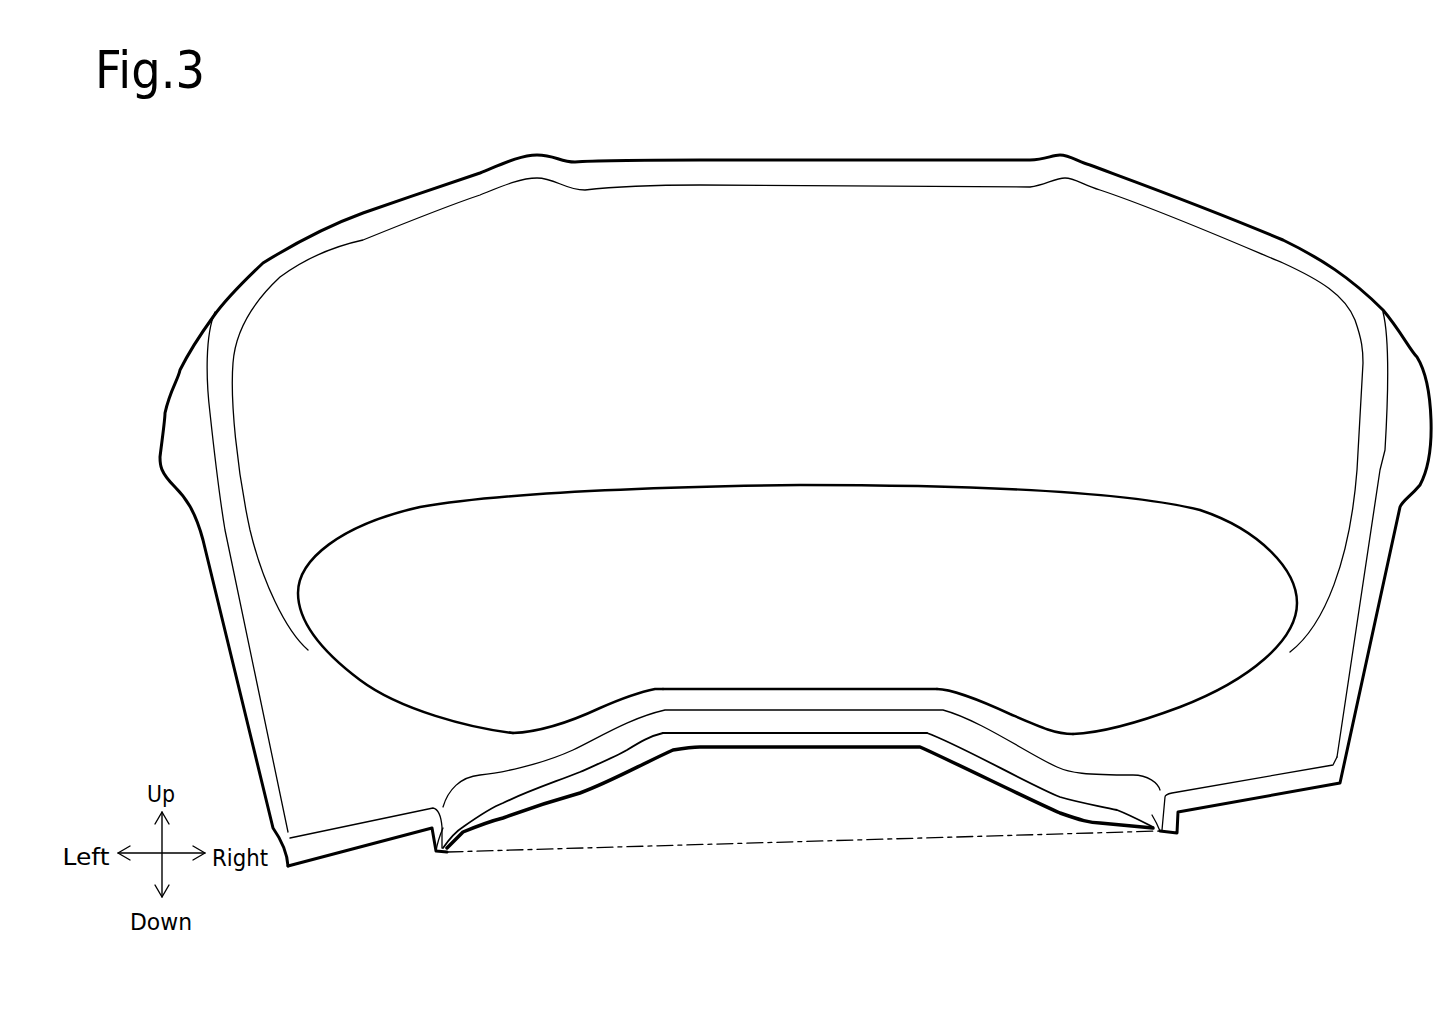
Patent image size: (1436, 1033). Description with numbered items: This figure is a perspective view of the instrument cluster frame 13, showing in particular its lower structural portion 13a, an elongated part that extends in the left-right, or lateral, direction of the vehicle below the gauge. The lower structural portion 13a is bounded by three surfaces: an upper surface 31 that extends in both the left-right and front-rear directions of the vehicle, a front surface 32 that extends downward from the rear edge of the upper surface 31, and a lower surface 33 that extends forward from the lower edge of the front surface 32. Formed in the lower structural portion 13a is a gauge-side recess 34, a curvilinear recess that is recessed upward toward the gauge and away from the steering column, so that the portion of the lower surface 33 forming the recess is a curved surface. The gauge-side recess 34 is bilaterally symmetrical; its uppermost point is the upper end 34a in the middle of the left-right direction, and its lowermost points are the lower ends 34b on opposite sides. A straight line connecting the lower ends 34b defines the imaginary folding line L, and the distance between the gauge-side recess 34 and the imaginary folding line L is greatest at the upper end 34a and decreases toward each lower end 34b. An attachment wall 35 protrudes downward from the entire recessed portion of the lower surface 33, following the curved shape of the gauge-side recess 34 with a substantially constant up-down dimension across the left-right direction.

The instrument cluster frame 13 is at (286, 179).
The lower structural portion 13a is at (787, 632).
The upper surface 31 is at (795, 687).
The front surface 32 is at (853, 698).
The lower surface 33 is at (898, 723).
The gauge-side recess 34 is at (604, 750).
The upper end 34a is at (737, 720).
The lower ends 34b is at (458, 810).
The attachment wall 35 is at (818, 738).
The imaginary folding line L is at (828, 843).